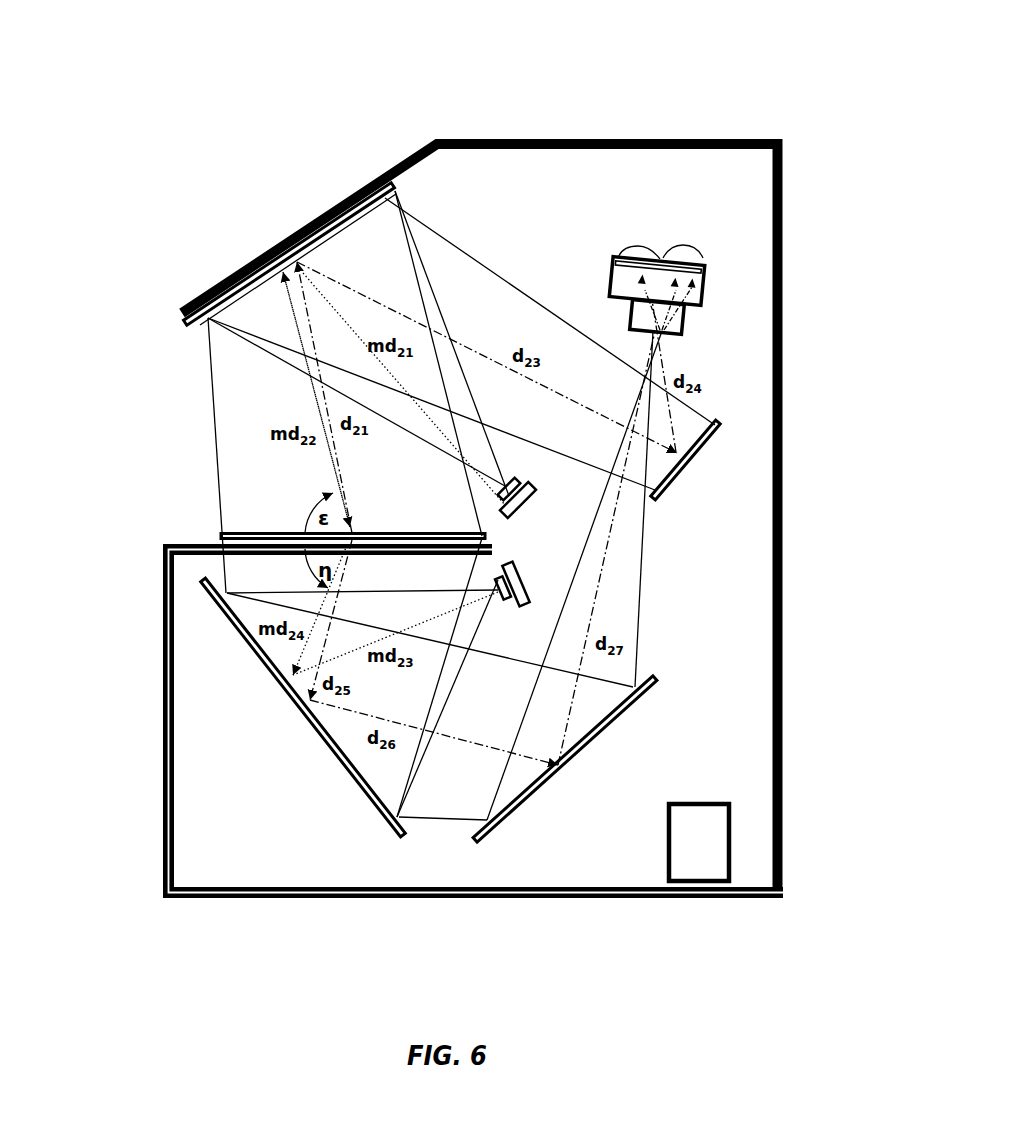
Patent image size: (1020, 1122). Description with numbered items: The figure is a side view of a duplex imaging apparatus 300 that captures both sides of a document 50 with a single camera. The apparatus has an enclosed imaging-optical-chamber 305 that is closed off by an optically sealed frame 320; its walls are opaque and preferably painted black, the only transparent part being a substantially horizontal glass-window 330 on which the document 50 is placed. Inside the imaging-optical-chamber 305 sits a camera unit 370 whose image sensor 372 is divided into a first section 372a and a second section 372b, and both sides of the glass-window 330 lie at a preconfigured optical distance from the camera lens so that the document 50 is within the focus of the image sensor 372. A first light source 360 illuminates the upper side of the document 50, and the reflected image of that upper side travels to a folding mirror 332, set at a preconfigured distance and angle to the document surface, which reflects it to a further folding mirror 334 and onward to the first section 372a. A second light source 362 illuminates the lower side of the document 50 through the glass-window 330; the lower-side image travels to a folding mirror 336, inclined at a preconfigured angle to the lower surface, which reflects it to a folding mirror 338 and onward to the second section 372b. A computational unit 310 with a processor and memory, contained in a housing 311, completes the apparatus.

The duplex imaging apparatus 300 is at (272, 82).
The optically sealed frame 320 is at (740, 139).
The glass-window 330 is at (205, 558).
The imaging-optical-chamber 305 is at (217, 748).
The folding mirror 332 is at (342, 220).
The folding mirror 334 is at (700, 448).
The folding mirror 336 is at (365, 790).
The folding mirror 338 is at (628, 703).
The document 50 is at (262, 532).
The first light source 360 is at (530, 503).
The second light source 362 is at (545, 562).
The camera unit 370 is at (697, 313).
The image sensor 372 is at (705, 291).
The first section of image sensor 372a is at (639, 246).
The second section of image sensor 372b is at (683, 245).
The computational unit 310 is at (735, 848).
The housing 311 is at (697, 804).